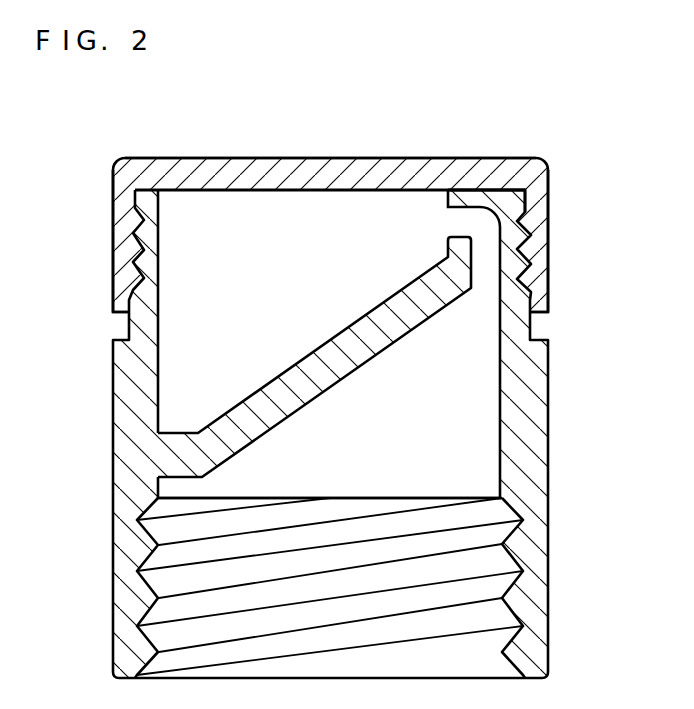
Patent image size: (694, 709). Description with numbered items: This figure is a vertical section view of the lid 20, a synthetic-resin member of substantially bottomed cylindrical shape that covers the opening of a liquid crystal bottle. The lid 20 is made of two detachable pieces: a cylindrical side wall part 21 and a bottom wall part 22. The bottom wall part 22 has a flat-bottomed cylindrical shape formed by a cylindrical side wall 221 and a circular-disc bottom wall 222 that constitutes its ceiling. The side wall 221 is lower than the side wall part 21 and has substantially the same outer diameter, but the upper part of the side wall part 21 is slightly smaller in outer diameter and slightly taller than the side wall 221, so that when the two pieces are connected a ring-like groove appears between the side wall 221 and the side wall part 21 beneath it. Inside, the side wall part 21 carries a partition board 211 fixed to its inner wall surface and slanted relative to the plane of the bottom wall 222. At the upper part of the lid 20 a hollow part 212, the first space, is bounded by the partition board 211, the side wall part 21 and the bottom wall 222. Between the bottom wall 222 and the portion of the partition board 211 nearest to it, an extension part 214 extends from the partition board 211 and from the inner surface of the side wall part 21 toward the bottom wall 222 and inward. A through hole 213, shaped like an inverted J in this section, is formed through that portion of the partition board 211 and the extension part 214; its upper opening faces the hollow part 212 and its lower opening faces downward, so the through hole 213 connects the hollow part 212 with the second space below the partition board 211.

The lid 20 is at (664, 99).
The side wall part 21 is at (548, 565).
The bottom wall part 22 is at (348, 159).
The partition board 211 is at (347, 367).
The hollow part 212 is at (242, 240).
The through hole 213 is at (450, 223).
The extension part 214 is at (478, 197).
The side wall 221 is at (547, 238).
The bottom wall 222 is at (482, 158).